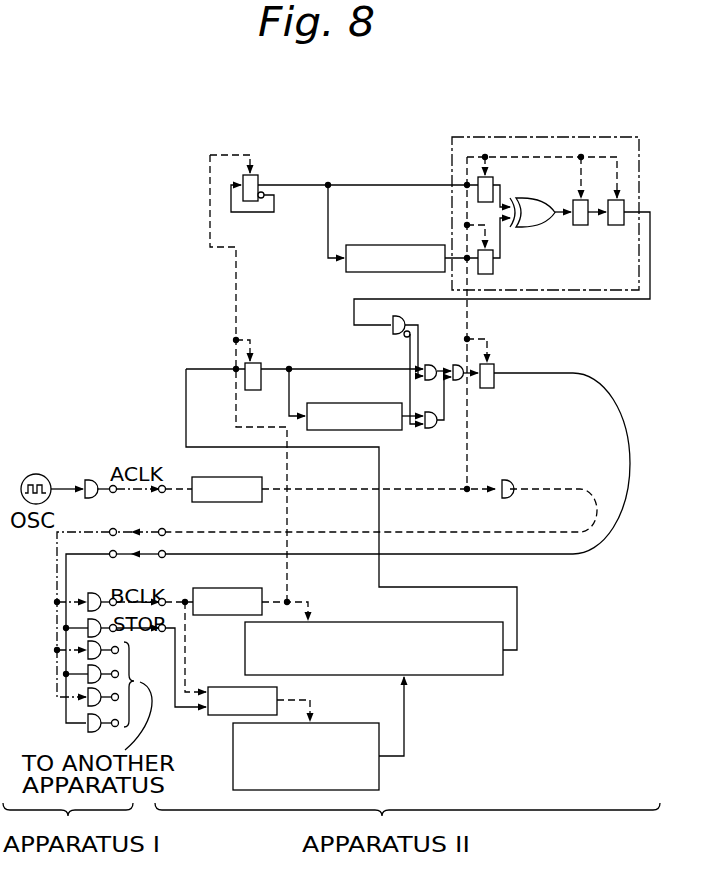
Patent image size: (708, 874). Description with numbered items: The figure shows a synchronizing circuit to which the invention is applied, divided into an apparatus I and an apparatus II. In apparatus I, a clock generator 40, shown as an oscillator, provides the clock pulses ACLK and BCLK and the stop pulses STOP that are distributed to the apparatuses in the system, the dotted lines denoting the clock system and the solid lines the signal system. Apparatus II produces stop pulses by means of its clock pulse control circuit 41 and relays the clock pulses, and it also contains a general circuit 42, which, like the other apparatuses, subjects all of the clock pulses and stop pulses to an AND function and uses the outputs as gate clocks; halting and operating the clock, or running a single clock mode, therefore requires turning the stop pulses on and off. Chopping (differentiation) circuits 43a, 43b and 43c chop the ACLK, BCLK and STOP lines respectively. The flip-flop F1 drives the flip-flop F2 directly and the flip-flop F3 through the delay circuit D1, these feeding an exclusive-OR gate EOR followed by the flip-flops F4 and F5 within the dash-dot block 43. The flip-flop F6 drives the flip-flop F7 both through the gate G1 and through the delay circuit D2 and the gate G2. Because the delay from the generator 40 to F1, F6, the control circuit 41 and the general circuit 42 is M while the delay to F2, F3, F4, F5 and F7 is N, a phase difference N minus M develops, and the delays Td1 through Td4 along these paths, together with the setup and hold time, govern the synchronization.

The clock generator 40 is at (39, 474).
The clock pulse control circuit 41 is at (480, 676).
The general circuit 42 is at (379, 776).
The phase comparison circuit 43 is at (545, 284).
The chopping circuit 43a is at (194, 503).
The chopping circuit 43b is at (240, 587).
The chopping circuit 43c is at (222, 687).
The flip-flop circuit F1 is at (264, 193).
The flip-flop circuit F2 is at (495, 179).
The flip-flop circuit F3 is at (496, 269).
The flip-flop circuit F4 is at (581, 229).
The flip-flop circuit F5 is at (616, 229).
The flip-flop circuit F6 is at (256, 362).
The flip-flop circuit F7 is at (491, 363).
The delay circuit D1 is at (386, 228).
The delay circuit D2 is at (345, 399).
The gate G1 is at (452, 361).
The gate G2 is at (432, 437).
The exclusive OR gate EOR is at (535, 226).